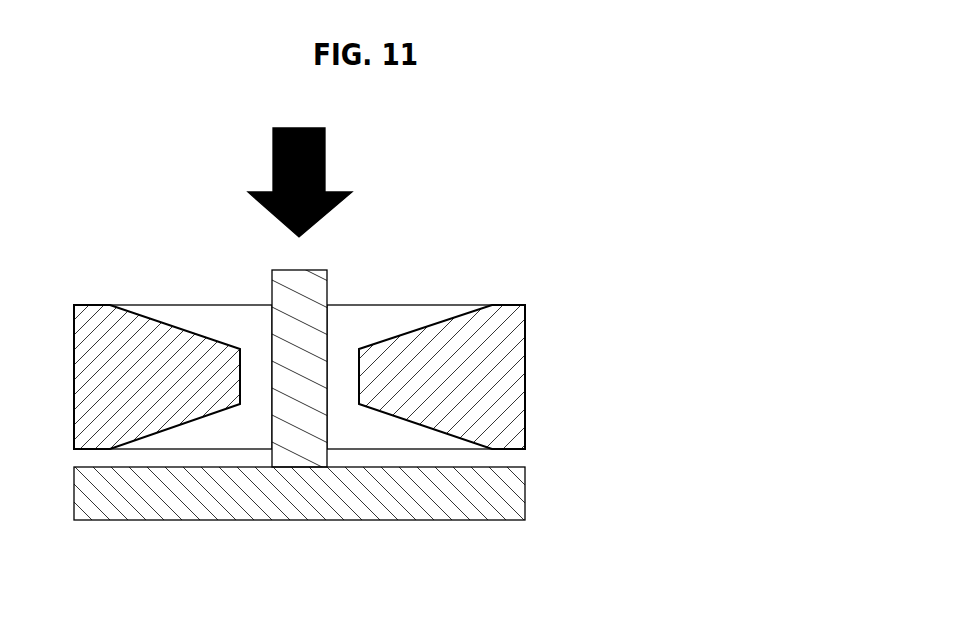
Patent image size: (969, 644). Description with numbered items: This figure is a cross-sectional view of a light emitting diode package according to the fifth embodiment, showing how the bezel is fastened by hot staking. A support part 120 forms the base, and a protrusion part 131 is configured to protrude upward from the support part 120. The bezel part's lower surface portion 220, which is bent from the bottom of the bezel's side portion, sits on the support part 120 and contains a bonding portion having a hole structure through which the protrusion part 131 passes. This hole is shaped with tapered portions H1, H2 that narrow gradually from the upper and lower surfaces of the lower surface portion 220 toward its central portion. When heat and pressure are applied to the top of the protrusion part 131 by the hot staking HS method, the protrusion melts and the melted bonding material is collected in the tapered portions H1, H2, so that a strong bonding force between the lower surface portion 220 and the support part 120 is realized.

The hot staking HS is at (300, 166).
The protrusion part 131 is at (318, 288).
The lower surface portion 220 is at (510, 377).
The support part 120 is at (510, 497).
The tapered portion H1 is at (225, 318).
The tapered portion H2 is at (225, 435).